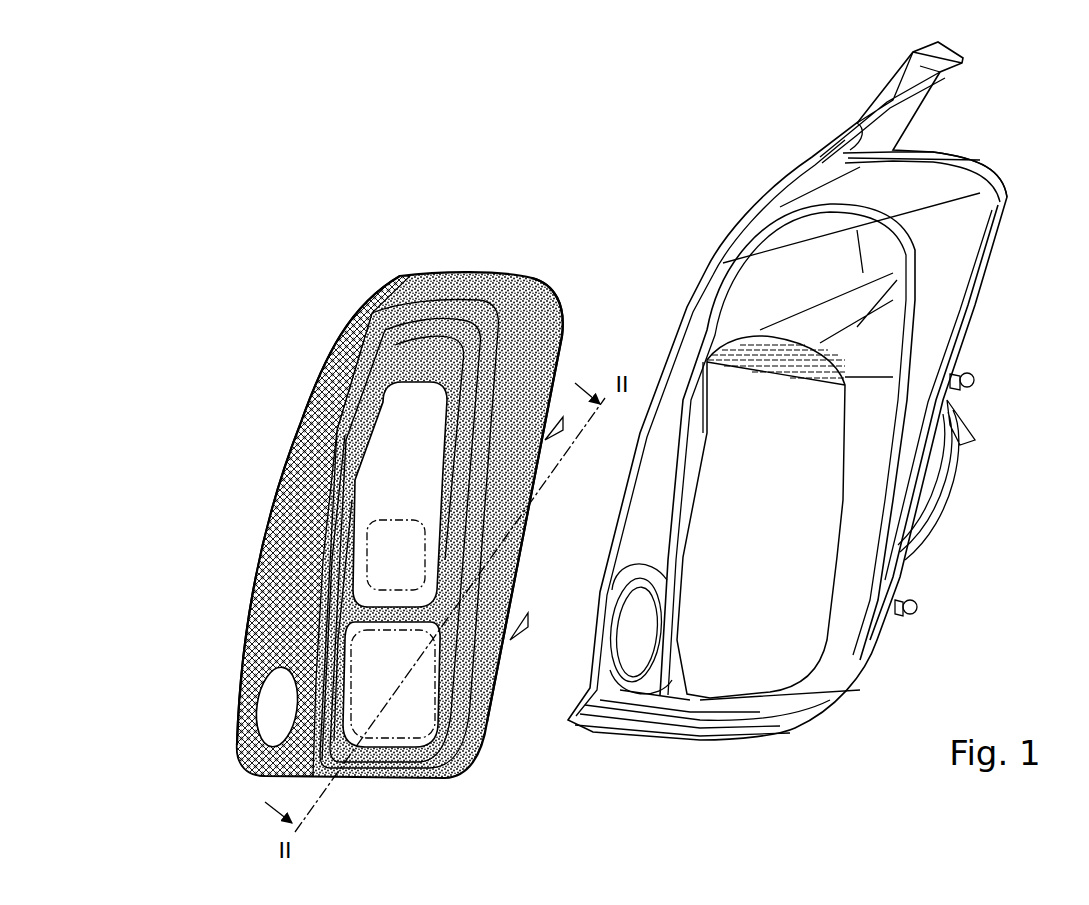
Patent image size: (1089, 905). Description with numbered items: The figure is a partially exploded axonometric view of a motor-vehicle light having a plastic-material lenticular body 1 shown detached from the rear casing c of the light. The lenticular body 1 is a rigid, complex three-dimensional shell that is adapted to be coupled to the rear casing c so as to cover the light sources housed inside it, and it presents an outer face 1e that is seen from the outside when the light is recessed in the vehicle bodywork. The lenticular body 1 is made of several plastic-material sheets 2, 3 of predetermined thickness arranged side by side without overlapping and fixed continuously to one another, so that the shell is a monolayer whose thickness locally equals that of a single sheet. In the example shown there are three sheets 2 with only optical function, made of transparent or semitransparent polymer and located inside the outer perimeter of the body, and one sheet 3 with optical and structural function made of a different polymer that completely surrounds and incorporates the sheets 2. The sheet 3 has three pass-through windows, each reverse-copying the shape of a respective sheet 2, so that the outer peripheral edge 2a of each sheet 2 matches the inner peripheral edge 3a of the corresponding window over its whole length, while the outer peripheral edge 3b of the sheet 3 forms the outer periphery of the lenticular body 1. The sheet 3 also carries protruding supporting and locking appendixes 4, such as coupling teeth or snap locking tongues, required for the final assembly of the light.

The plastic-material lenticular body 1 is at (274, 250).
The outer face 1e is at (364, 419).
The plastic-material sheet with optical function 2 is at (372, 312).
The outer peripheral edge of sheet 2 2a is at (347, 545).
The plastic-material sheet with optical and structural function 3 is at (450, 298).
The inner peripheral edge of sheet 3 3a is at (372, 521).
The outer peripheral edge of sheet 3 3b is at (541, 290).
The supporting and locking appendixes 4 is at (558, 428).
The rear casing c is at (698, 254).